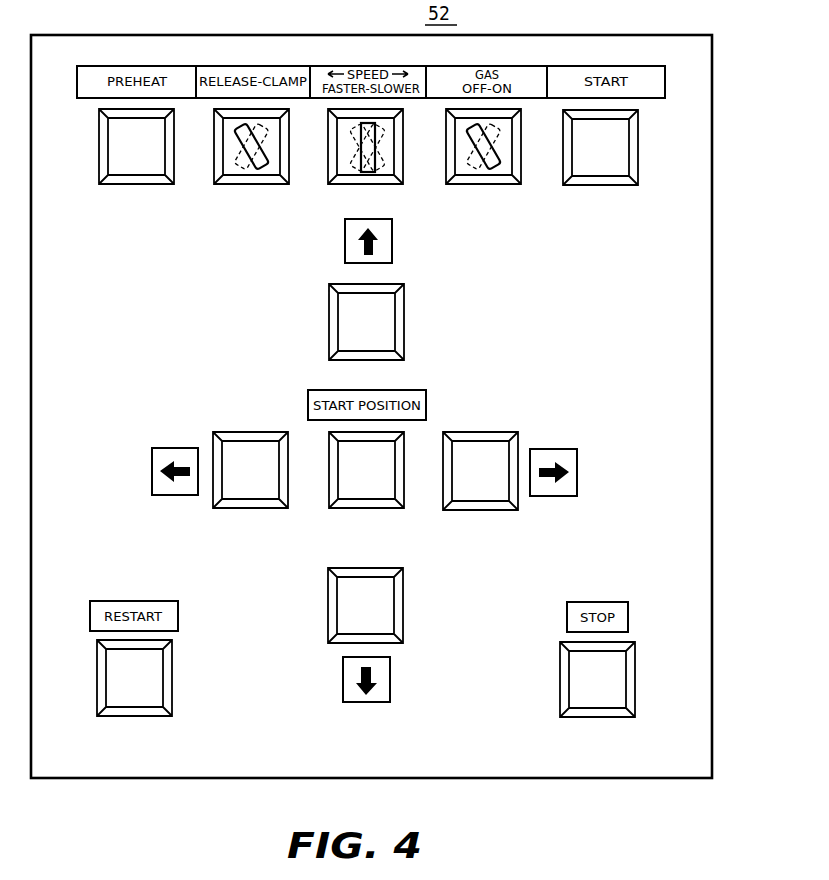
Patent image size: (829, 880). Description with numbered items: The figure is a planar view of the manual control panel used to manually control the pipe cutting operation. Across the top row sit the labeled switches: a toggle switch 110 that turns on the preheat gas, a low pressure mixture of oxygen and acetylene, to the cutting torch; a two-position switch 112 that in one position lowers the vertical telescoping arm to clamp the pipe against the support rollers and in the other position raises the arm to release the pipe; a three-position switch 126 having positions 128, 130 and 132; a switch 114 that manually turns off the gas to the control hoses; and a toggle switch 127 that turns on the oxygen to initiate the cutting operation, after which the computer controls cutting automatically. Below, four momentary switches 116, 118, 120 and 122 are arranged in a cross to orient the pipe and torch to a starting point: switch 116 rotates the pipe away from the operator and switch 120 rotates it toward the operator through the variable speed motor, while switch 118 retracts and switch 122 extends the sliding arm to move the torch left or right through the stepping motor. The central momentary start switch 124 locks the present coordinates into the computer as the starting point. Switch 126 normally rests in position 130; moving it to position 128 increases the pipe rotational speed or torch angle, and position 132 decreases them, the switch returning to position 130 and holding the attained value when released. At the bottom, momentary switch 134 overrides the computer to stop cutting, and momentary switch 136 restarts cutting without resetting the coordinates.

The toggle switch 110 is at (144, 172).
The two-position switch 112 is at (250, 182).
The switch 114 is at (482, 187).
The momentary switch 116 is at (405, 323).
The momentary switch 118 is at (249, 432).
The momentary switch 120 is at (338, 601).
The momentary switch 122 is at (485, 435).
The momentary start switch 124 is at (375, 510).
The three-position switch 126 is at (367, 164).
The toggle switch 127 is at (587, 187).
The position 128 is at (350, 130).
The position 130 is at (372, 133).
The position 132 is at (399, 127).
The momentary switch 134 is at (562, 670).
The momentary switch 136 is at (174, 667).